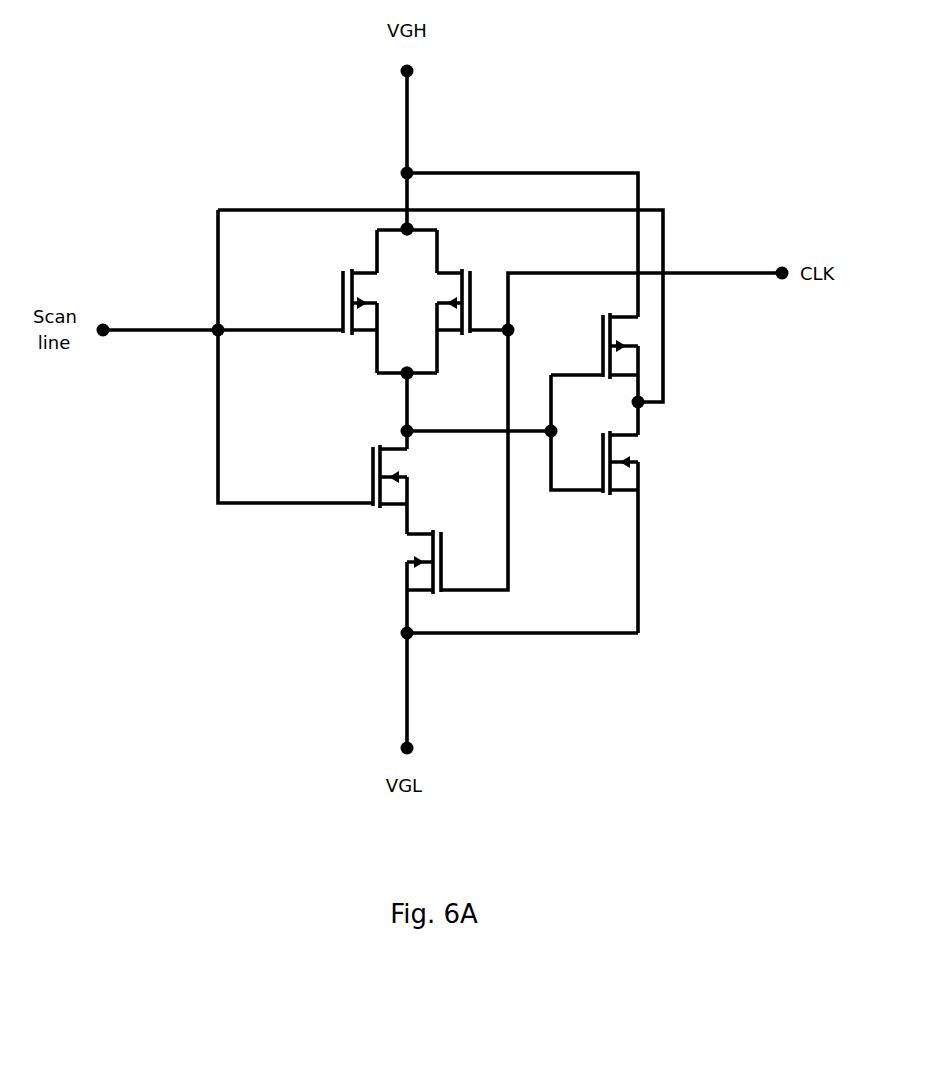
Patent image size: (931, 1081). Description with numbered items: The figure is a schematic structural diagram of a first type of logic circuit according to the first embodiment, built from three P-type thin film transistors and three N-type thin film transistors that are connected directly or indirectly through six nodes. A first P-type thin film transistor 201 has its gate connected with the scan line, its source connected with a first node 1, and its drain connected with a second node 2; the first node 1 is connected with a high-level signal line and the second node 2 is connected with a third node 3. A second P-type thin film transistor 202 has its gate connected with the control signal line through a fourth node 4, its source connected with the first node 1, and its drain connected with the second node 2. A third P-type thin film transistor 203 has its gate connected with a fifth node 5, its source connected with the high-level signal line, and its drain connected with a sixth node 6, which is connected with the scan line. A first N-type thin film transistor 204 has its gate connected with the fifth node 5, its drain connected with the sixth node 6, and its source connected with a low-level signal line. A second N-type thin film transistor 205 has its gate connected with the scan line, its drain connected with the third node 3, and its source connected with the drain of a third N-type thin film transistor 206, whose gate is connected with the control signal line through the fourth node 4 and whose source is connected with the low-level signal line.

The first P-type thin film transistor 201 is at (353, 292).
The second P-type thin film transistor 202 is at (453, 272).
The third P-type thin film transistor 203 is at (630, 347).
The first N-type thin film transistor 204 is at (632, 465).
The second N-type thin film transistor 205 is at (374, 470).
The third N-type thin film transistor 206 is at (424, 543).
The node 1 is at (407, 245).
The node 2 is at (407, 359).
The node 3 is at (415, 418).
The node 4 is at (519, 333).
The node 5 is at (539, 446).
The node 6 is at (628, 403).